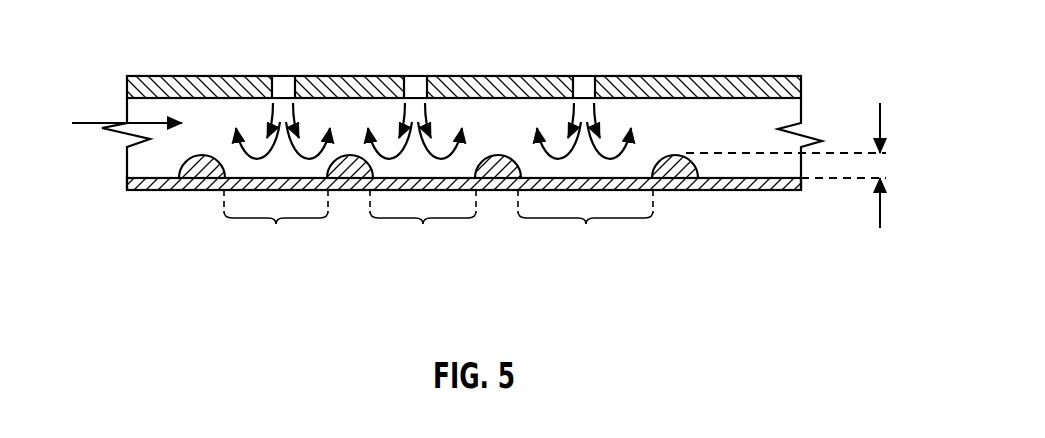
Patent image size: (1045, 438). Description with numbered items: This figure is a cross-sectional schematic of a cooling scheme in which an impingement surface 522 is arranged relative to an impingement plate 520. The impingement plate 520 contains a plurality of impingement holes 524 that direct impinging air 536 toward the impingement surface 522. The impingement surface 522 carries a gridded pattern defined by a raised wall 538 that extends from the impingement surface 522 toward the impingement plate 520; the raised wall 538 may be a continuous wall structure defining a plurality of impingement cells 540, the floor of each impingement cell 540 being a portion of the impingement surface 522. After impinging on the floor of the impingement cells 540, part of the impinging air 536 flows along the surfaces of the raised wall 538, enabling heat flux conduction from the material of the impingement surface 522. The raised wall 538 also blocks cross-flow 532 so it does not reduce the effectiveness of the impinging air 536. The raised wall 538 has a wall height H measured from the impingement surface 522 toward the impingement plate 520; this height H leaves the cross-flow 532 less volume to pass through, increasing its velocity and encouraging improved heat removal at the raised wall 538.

The impingement plate 520 is at (716, 85).
The impingement surface 522 is at (128, 183).
The impingement holes 524 is at (283, 82).
The cross-flow 532 is at (92, 122).
The impinging air 536 is at (272, 112).
The raised wall 538 is at (202, 175).
The impingement cells 540 is at (276, 224).
The wall height H is at (880, 128).